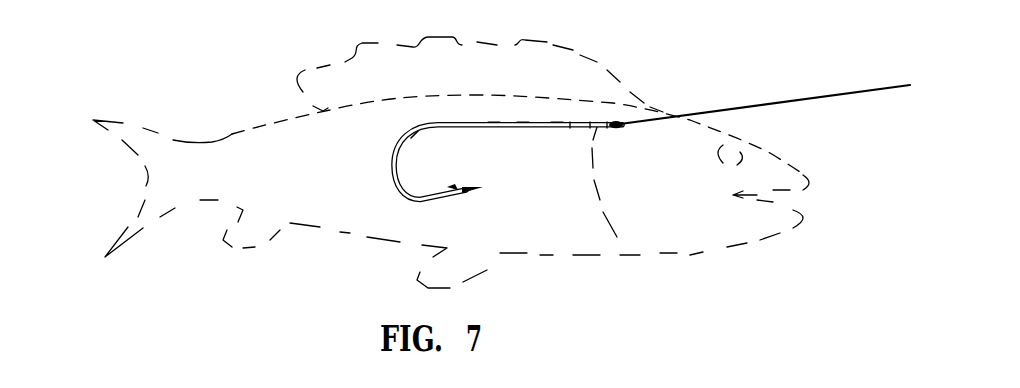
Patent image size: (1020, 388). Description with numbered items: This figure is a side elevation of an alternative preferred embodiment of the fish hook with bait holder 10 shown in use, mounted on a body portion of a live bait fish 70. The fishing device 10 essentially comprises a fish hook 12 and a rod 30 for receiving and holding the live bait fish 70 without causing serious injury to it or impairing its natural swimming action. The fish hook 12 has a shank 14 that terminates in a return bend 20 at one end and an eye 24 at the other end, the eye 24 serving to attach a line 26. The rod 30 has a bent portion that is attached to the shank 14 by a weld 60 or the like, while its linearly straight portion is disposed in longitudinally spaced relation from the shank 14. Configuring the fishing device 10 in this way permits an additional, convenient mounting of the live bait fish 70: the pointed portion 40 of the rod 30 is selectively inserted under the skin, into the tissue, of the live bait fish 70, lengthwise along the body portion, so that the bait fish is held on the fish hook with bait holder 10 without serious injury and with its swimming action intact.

The fish hook with bait holder fishing device 10 is at (439, 99).
The fish hook 12 is at (562, 113).
The shank 14 is at (525, 113).
The return bend 20 is at (390, 173).
The eye 24 is at (604, 123).
The line 26 is at (720, 109).
The rod 30 is at (492, 113).
The pointed portion 40 is at (571, 128).
The weld 60 is at (410, 135).
The live bait fish 70 is at (706, 253).